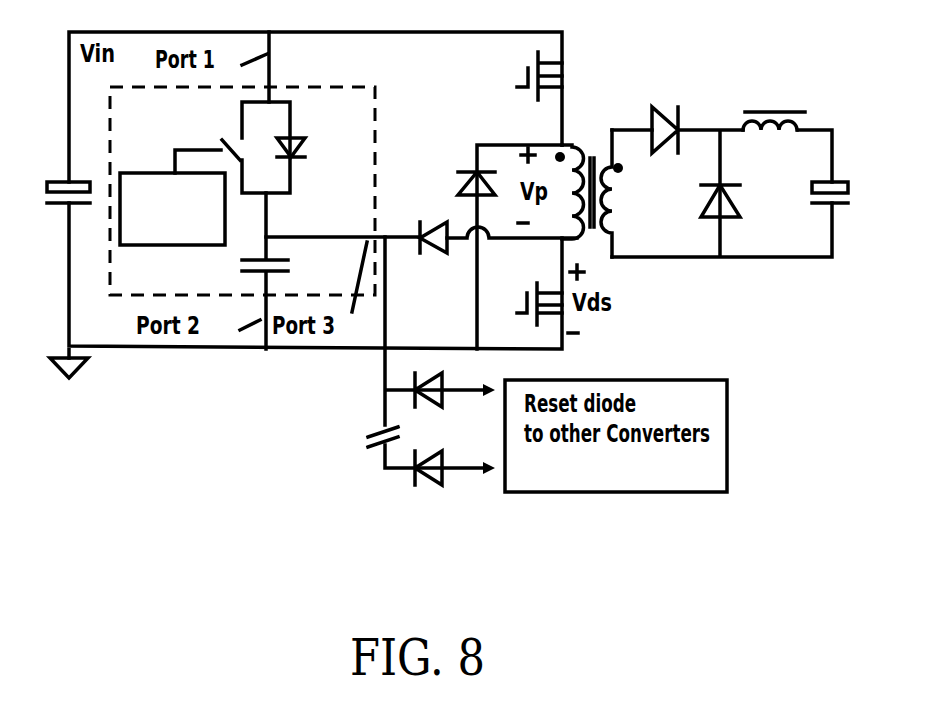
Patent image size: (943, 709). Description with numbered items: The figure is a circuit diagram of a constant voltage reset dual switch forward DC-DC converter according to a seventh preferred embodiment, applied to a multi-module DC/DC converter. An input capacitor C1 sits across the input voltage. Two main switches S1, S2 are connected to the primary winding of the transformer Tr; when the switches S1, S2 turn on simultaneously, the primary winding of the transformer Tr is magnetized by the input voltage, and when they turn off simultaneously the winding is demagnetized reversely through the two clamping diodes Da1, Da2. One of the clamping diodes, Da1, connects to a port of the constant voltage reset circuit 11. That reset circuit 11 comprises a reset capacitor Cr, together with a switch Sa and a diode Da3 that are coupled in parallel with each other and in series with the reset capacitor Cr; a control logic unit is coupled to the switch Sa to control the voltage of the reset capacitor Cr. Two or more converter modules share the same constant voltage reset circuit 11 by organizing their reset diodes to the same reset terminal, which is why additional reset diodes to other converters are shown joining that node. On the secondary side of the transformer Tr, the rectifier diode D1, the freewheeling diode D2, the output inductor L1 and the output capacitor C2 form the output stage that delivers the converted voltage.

The constant voltage reset circuit 11 is at (242, 196).
The input capacitor C1 is at (51, 210).
The switch Sa is at (239, 147).
The diode Da3 is at (316, 132).
The reset capacitor Cr is at (241, 271).
The clamping diode Da1 is at (431, 256).
The clamping diode Da2 is at (452, 167).
The switch S1 is at (517, 76).
The switch S2 is at (531, 294).
The transformer Tr is at (589, 182).
The output rectifier diode D1 is at (660, 111).
The freewheeling diode D2 is at (695, 204).
The output inductor L1 is at (774, 102).
The output capacitor C2 is at (842, 214).